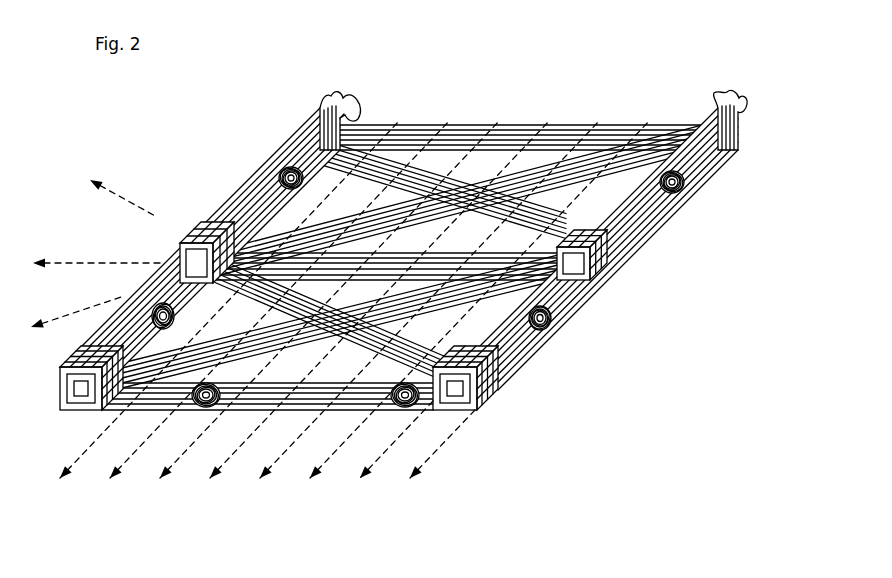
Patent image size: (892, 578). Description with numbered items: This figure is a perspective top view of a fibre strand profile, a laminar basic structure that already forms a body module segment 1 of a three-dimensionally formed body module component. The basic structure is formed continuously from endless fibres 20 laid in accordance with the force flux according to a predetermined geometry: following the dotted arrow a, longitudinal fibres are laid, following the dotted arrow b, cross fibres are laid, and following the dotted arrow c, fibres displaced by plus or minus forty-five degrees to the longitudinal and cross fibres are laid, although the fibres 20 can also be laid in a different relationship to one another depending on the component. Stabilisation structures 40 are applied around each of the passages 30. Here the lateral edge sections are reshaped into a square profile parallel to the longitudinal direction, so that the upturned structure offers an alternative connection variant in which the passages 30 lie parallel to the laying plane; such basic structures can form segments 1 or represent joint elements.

The body module segment 1 is at (379, 298).
The endless fibres 20 is at (257, 190).
The passage 30 is at (541, 333).
The stabilisation structure 40 is at (684, 199).